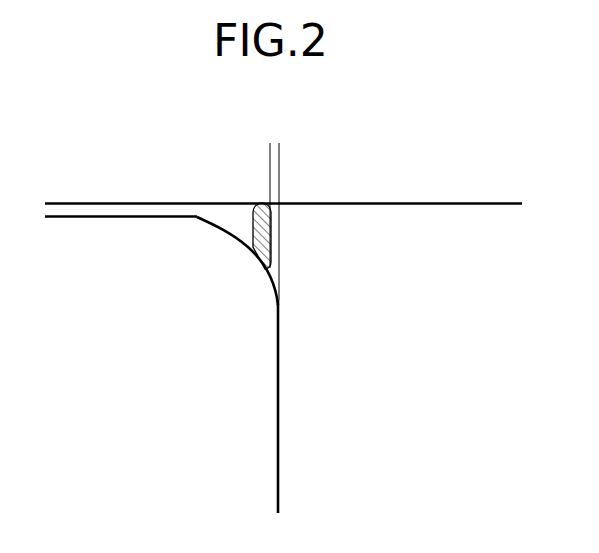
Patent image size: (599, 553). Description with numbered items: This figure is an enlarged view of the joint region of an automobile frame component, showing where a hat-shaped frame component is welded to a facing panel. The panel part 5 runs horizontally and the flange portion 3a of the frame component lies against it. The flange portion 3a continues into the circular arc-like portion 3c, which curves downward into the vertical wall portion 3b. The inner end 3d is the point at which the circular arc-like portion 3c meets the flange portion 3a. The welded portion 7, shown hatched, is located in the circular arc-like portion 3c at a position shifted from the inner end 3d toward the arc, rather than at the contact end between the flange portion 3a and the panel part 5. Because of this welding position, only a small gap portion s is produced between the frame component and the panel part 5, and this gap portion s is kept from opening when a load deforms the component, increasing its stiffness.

The panel part 5 is at (408, 203).
The flange portion 3a is at (83, 218).
The vertical wall portion 3b is at (278, 441).
The circular arc-like portion 3c is at (240, 238).
The inner end 3d is at (197, 218).
The welded portion 7 is at (258, 203).
The gap portion s is at (245, 154).